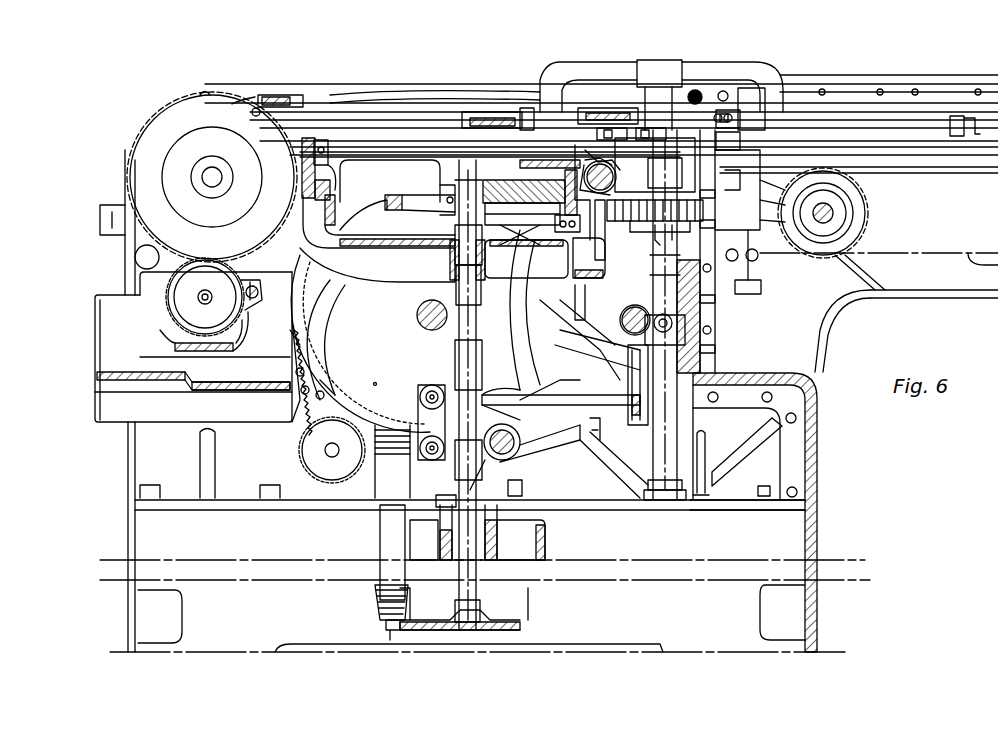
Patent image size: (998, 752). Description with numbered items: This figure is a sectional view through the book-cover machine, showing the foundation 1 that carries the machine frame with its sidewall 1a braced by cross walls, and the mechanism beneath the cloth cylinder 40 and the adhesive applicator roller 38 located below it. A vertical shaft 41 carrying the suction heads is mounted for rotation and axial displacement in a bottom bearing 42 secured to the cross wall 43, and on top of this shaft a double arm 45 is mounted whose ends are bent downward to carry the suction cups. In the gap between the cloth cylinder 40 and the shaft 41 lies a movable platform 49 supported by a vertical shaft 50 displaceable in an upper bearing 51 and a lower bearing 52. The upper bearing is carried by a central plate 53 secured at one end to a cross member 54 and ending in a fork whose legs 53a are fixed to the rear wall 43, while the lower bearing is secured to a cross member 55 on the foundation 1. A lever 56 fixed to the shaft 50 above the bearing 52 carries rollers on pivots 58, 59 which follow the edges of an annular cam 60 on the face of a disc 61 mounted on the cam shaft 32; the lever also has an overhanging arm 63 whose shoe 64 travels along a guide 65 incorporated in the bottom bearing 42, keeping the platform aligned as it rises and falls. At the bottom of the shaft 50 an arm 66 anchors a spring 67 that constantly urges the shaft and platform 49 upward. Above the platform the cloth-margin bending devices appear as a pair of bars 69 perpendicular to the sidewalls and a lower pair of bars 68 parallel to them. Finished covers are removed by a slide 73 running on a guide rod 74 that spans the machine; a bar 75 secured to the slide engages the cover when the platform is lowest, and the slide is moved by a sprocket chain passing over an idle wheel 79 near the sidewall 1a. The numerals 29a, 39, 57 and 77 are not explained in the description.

The foundation 1 is at (817, 527).
The sidewall 1a is at (812, 450).
The gear segment 29a is at (298, 402).
The cam shaft 32 is at (423, 325).
The adhesive applicator roller 38 is at (241, 322).
The housing 39 is at (110, 312).
The cloth cylinder 40 is at (168, 106).
The shaft 41 is at (660, 250).
The bottom bearing 42 is at (698, 372).
The cross wall 43 is at (702, 345).
The double arm 45 is at (762, 75).
The movable platform 49 is at (520, 168).
The vertical shaft 50 is at (450, 262).
The bearing 51 is at (487, 262).
The bearing 52 is at (497, 538).
The central plate 53 is at (386, 248).
The legs 53a is at (570, 278).
The cross member 54 is at (328, 183).
The cross member 55 is at (443, 540).
The lever 56 is at (485, 408).
The link 57 is at (418, 420).
The pivot 58 is at (432, 385).
The pivot 59 is at (420, 460).
The annular cam 60 is at (315, 347).
The disc 61 is at (377, 373).
The overhanging arm 63 is at (525, 457).
The shoe 64 is at (614, 458).
The guide 65 is at (652, 395).
The arm 66 is at (420, 626).
The spring 67 is at (375, 592).
The bars 68 is at (400, 140).
The bars 69 is at (490, 112).
The slide 73 is at (610, 162).
The guide rod 74 is at (612, 182).
The bar 75 is at (405, 158).
The connecting rod 77 is at (565, 338).
The idle wheel 79 is at (575, 247).